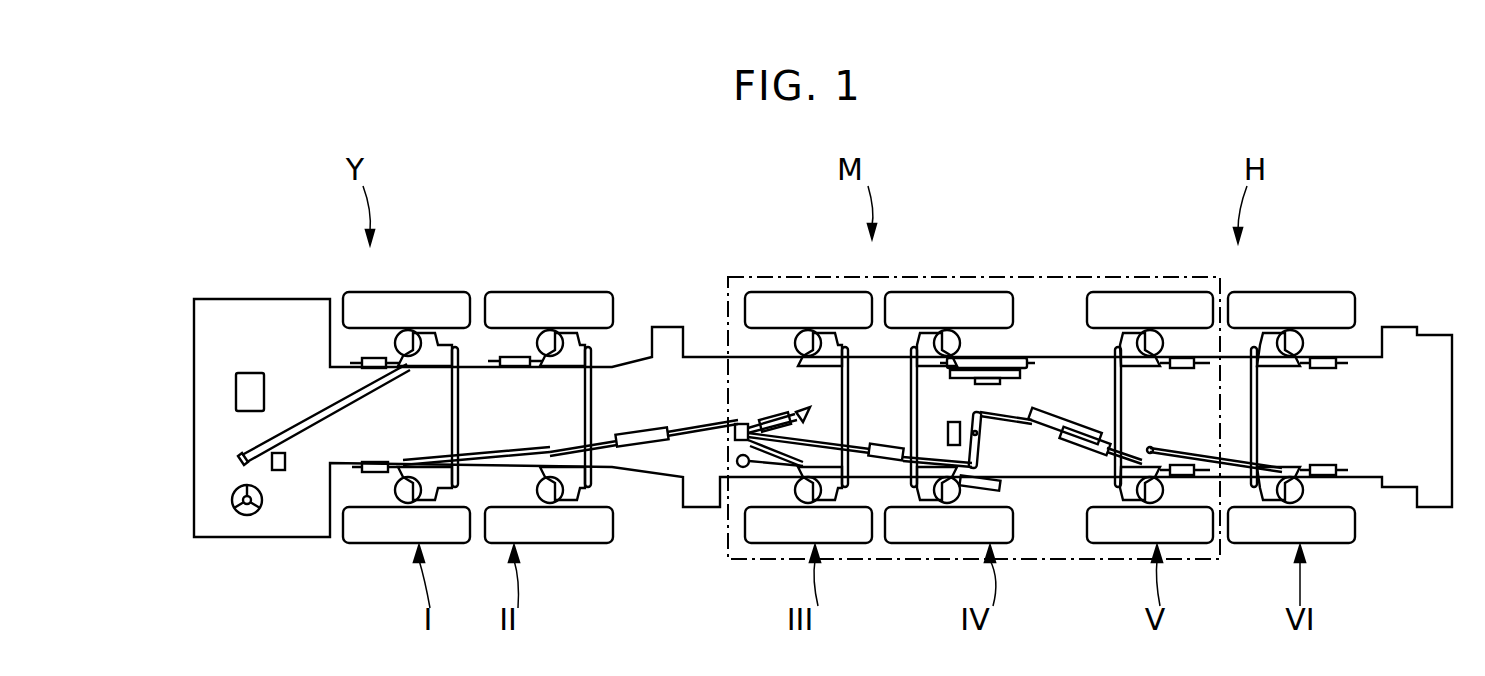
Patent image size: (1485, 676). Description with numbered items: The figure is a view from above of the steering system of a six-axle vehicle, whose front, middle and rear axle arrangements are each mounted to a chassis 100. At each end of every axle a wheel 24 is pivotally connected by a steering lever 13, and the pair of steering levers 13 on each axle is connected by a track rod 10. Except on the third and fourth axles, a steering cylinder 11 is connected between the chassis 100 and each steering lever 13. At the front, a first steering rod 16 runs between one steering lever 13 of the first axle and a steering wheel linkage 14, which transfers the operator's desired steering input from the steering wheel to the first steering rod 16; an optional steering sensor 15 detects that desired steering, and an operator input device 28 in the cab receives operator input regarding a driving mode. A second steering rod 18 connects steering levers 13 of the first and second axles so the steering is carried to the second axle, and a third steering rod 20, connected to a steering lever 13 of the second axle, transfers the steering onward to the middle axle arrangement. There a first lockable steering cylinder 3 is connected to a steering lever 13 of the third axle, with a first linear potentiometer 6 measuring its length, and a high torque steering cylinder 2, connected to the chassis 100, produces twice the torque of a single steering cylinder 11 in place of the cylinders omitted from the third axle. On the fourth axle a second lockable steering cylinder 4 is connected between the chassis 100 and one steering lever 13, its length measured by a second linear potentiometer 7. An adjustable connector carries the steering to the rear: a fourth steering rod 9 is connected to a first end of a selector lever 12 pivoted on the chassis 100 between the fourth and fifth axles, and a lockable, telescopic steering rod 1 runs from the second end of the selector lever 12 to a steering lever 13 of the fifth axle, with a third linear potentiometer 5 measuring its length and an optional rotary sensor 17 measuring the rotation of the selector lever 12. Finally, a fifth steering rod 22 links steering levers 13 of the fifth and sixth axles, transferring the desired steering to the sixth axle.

The chassis 100 is at (1430, 510).
The wheel 24 is at (396, 312).
The steering lever 13 is at (425, 340).
The track rod 10 is at (453, 397).
The steering cylinder 11 is at (375, 357).
The operator input device 28 is at (250, 372).
The steering wheel linkage 14 is at (250, 516).
The steering sensor 15 is at (278, 472).
The first steering rod 16 is at (318, 405).
The second steering rod 18 is at (488, 456).
The third steering rod 20 is at (645, 449).
The first lockable steering cylinder 3 is at (735, 432).
The high torque steering cylinder 2 is at (764, 418).
The first linear potentiometer 6 is at (745, 470).
The fourth steering rod 9 is at (874, 448).
The rotary sensor 17 is at (952, 424).
The selector lever 12 is at (983, 438).
The second lockable steering cylinder 4 is at (1005, 360).
The second linear potentiometer 7 is at (994, 370).
The lockable, telescopic steering rod 1 is at (1052, 448).
The third linear potentiometer 5 is at (1062, 415).
The fifth steering rod 22 is at (1178, 460).